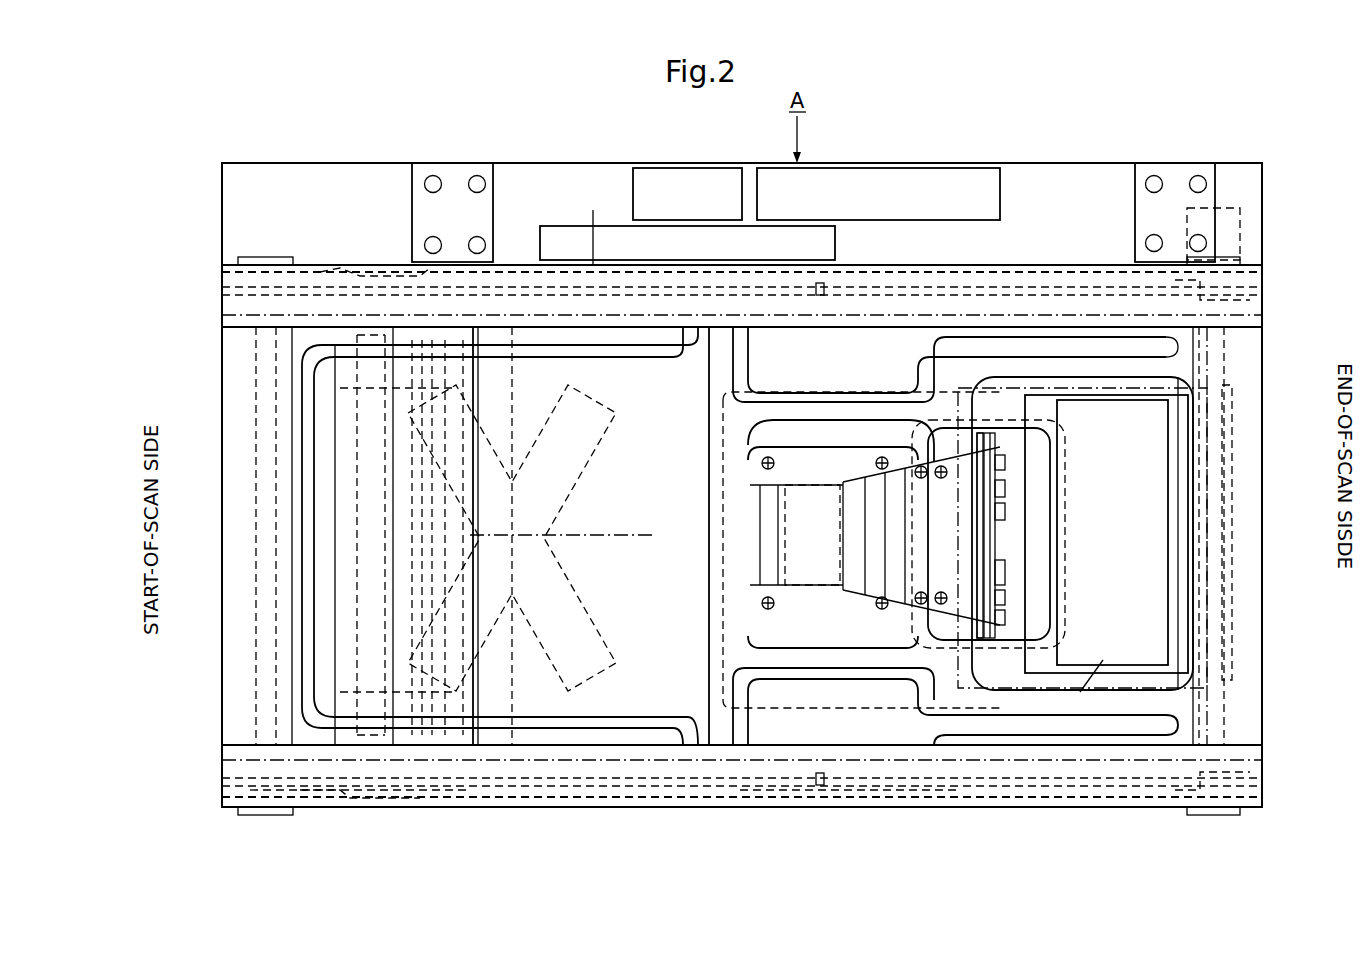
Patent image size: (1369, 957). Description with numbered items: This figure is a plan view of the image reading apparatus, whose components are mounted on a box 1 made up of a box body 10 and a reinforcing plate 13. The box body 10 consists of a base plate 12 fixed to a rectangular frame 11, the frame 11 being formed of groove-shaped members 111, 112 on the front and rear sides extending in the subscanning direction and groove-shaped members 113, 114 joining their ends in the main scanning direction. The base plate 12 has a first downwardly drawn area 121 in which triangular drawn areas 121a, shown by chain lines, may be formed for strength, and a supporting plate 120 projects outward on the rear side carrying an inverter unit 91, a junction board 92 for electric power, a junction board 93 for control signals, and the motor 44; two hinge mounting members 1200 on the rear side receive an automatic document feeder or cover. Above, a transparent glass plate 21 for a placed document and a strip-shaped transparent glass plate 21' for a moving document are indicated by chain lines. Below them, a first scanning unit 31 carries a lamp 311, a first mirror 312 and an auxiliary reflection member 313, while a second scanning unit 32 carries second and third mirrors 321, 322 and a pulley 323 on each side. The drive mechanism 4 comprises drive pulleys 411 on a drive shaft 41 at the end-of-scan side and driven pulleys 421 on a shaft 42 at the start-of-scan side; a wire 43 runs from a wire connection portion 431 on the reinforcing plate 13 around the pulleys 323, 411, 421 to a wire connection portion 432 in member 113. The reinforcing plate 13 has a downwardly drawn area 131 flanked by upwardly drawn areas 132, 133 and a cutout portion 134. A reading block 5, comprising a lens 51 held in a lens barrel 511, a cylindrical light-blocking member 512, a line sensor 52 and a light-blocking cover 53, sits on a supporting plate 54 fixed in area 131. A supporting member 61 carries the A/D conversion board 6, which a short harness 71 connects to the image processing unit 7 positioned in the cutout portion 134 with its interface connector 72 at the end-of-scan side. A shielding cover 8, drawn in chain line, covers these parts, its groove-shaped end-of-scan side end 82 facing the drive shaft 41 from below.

The box 1 is at (510, 812).
The drive mechanism 4 is at (518, 282).
The reading block 5 is at (820, 543).
The A/D conversion board 6 is at (993, 645).
The image processing unit 7 is at (1124, 548).
The shielding cover 8 is at (1062, 378).
The box body 10 is at (553, 812).
The rectangular frame 11 is at (588, 812).
The base plate 12 is at (668, 747).
The reinforcing plate 13 is at (702, 422).
The transparent glass plate 21 is at (850, 817).
The transparent glass plate 21' is at (361, 813).
The first scanning unit 31 is at (484, 628).
The second scanning unit 32 is at (328, 592).
The drive shaft 41 is at (1262, 342).
The shaft 42 is at (262, 360).
The wire 43 is at (644, 335).
The motor 44 is at (1240, 230).
The lens 51 is at (822, 485).
The line sensor 52 is at (1010, 478).
The light-blocking cover 53 is at (860, 580).
The supporting plate 54 is at (830, 612).
The supporting member 61 is at (976, 640).
The harness 71 is at (1015, 580).
The interface connector 72 is at (1250, 455).
The end-of-scan side end 82 is at (1240, 605).
The inverter unit 91 is at (703, 255).
The junction board 92 is at (700, 208).
The junction board 93 is at (891, 208).
The groove-shaped member 111 is at (607, 808).
The groove-shaped member 112 is at (592, 225).
The groove-shaped member 113 is at (222, 443).
The groove-shaped member 114 is at (1262, 410).
The supporting plate 120 is at (613, 158).
The first downwardly drawn area 121 is at (627, 580).
The triangular drawn areas 121a is at (589, 535).
The downwardly drawn area 131 is at (840, 445).
The upwardly drawn area 132 is at (840, 708).
The upwardly drawn area 133 is at (840, 390).
The cutout portion 134 is at (1103, 660).
The lamp 311 is at (440, 655).
The first mirror 312 is at (430, 678).
The auxiliary reflection member 313 is at (440, 708).
The second mirror 321 is at (300, 675).
The third mirror 322 is at (355, 690).
The pulley 323 is at (340, 275).
The drive pulley 411 is at (1262, 292).
The driven pulley 421 is at (222, 315).
The wire connection portion 431 is at (820, 295).
The wire connection portion 432 is at (236, 280).
The lens barrel 511 is at (795, 485).
The cylindrical light-blocking member 512 is at (765, 500).
The hinge mounting member 1200 is at (445, 163).